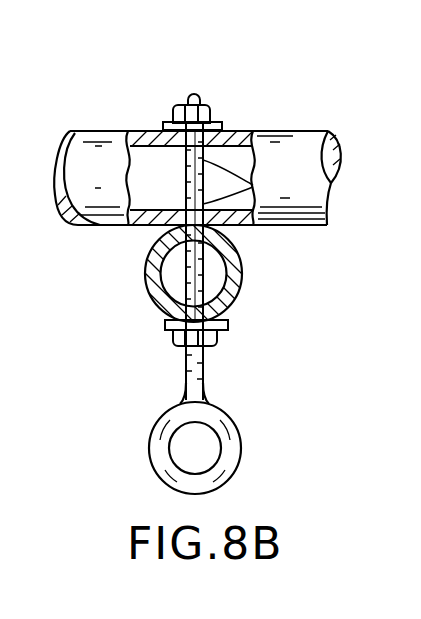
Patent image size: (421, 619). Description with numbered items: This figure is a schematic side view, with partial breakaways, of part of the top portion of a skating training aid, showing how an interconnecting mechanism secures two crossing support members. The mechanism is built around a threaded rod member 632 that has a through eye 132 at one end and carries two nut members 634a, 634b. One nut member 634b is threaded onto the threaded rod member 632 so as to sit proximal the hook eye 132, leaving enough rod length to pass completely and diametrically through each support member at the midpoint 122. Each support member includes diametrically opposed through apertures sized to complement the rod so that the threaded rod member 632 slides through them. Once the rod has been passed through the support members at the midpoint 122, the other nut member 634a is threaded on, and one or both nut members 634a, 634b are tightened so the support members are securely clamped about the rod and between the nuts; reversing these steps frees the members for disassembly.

The midpoint 122 is at (194, 86).
The through eye 132 is at (250, 432).
The threaded rod member 632 is at (186, 103).
The nut member 634a is at (212, 118).
The nut member 634b is at (230, 325).